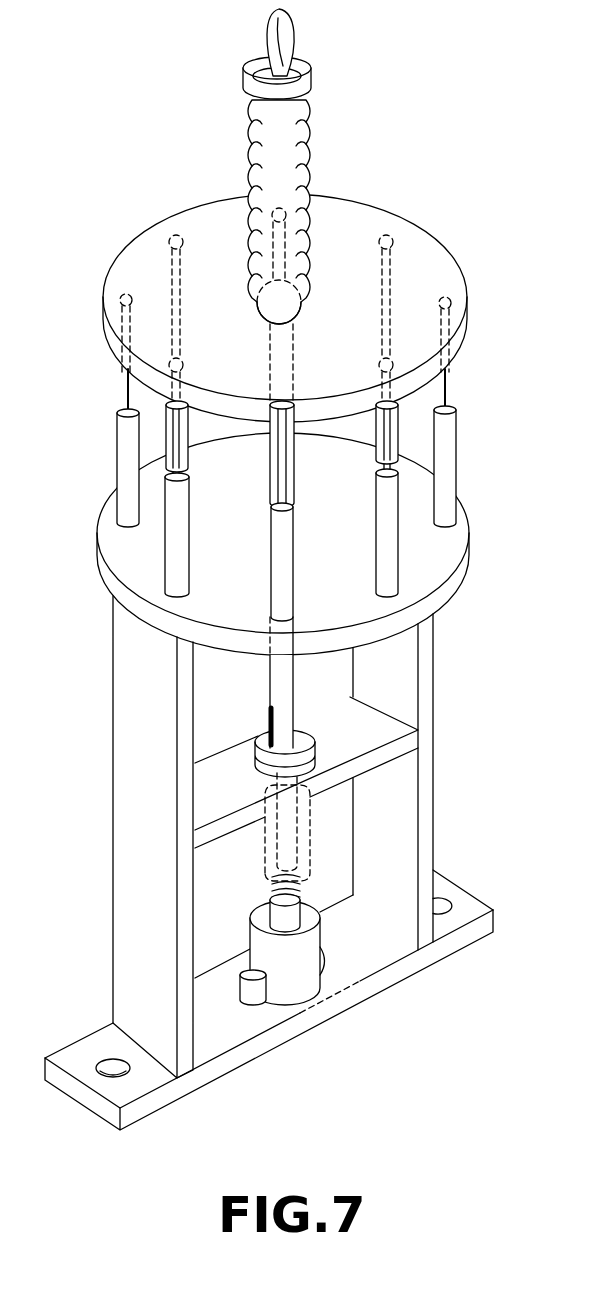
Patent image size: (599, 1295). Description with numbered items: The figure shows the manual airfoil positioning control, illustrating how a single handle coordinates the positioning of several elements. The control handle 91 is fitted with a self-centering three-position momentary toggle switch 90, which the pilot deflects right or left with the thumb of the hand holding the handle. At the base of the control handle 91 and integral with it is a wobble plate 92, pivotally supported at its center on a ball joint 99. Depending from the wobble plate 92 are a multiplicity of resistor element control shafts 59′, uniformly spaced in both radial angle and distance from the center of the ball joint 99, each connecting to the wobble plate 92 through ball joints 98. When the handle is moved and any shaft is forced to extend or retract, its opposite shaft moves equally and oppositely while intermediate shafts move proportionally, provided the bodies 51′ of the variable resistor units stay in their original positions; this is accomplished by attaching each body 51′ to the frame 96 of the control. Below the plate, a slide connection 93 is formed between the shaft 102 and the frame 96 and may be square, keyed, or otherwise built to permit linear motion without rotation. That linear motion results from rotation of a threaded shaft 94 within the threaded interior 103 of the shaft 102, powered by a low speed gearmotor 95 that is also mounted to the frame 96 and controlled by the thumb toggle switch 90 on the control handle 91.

The toggle switch 90 is at (268, 20).
The control handle 91 is at (250, 162).
The wobble plate 92 is at (430, 266).
The slide connection 93 is at (312, 733).
The threaded shaft 94 is at (268, 848).
The low speed gearmotor 95 is at (258, 948).
The frame 96 is at (140, 838).
The ball joints 98 is at (116, 301).
The ball joint 99 is at (256, 306).
The shaft 102 is at (296, 487).
The threaded interior 103 is at (253, 811).
The body of variable resistor unit 51′ is at (126, 508).
The resistor element control shafts 59′ is at (126, 398).